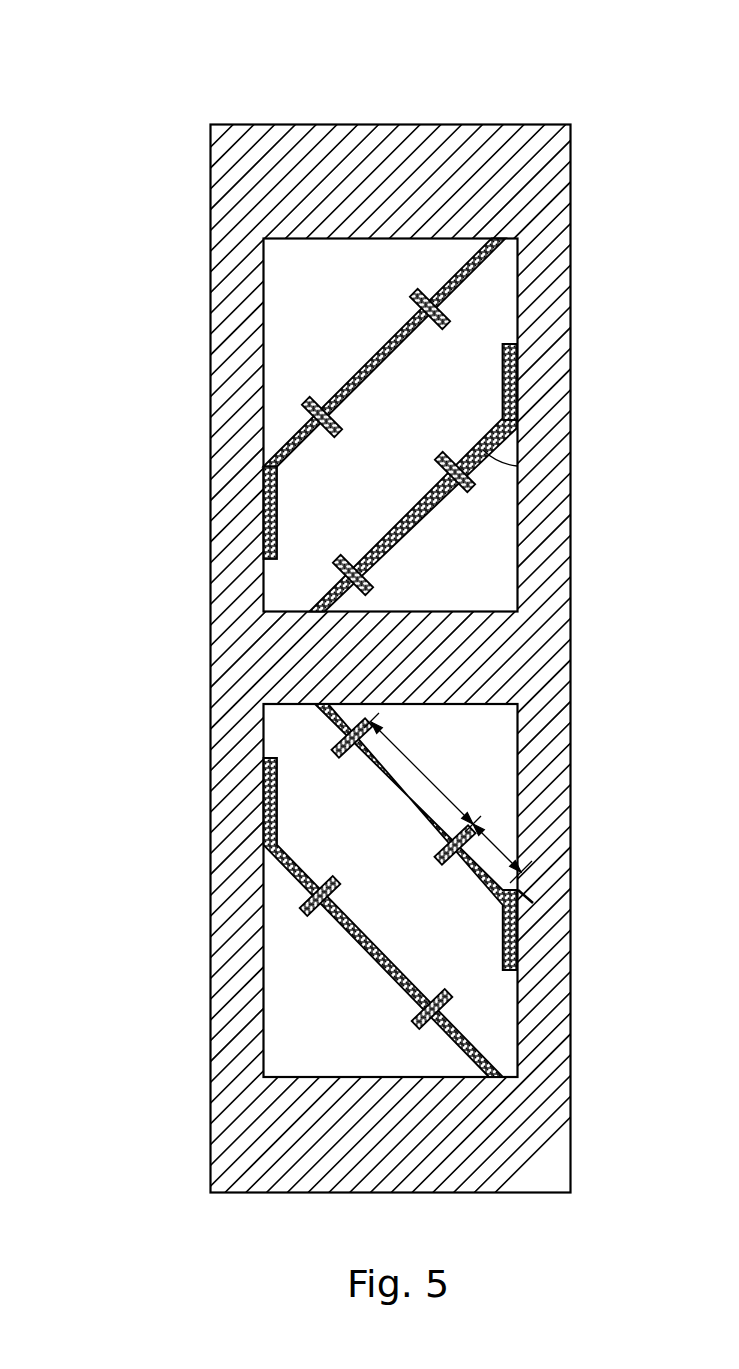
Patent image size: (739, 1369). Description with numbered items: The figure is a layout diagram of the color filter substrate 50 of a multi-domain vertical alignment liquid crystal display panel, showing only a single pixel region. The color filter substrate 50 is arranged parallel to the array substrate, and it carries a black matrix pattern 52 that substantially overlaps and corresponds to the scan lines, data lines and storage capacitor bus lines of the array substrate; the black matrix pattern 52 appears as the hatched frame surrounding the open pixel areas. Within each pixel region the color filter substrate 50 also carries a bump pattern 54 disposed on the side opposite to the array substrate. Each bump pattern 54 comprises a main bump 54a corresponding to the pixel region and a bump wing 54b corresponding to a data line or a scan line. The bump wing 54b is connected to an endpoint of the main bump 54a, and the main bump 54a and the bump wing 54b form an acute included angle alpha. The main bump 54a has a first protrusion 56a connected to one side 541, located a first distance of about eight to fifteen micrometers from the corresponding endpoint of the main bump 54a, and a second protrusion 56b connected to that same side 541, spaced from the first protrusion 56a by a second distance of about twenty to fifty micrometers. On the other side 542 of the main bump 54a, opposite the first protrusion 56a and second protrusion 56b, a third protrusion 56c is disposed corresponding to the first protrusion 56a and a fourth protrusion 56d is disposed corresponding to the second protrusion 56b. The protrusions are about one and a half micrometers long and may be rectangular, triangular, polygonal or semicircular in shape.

The color filter substrate 50 is at (369, 598).
The black matrix pattern 52 is at (553, 266).
The bump pattern 54 is at (269, 425).
The main bump 54a is at (363, 372).
The bump wing 54b is at (265, 508).
The side of the main bump 541 is at (332, 704).
The other side of the main bump 542 is at (327, 803).
The first protrusion 56a is at (531, 873).
The second protrusion 56b is at (481, 764).
The third protrusion 56c is at (448, 850).
The fourth protrusion 56d is at (346, 750).